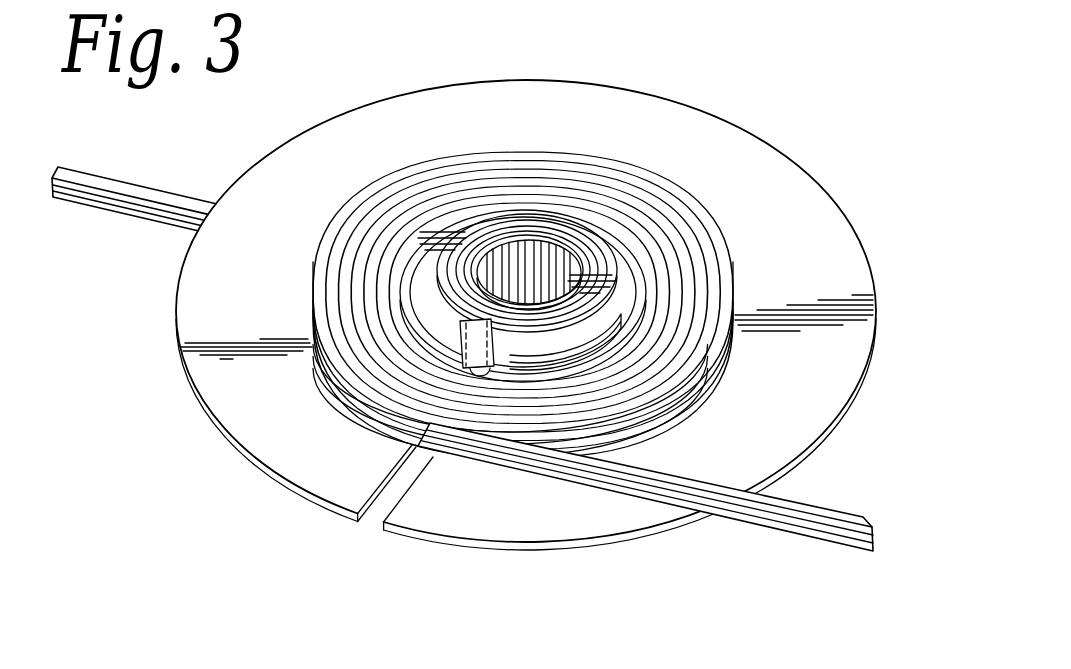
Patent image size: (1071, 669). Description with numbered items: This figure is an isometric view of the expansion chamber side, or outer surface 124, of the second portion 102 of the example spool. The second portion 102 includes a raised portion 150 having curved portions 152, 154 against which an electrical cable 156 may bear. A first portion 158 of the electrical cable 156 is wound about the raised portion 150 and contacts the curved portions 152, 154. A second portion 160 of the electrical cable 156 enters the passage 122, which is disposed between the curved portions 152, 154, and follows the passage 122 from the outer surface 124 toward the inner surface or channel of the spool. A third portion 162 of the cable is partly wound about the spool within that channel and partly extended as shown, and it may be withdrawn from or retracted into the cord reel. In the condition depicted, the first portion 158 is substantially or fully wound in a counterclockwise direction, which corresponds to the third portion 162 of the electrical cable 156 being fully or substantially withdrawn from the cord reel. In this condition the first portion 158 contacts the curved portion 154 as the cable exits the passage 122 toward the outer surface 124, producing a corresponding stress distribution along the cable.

The second portion 102 is at (739, 125).
The passage 122 is at (470, 370).
The outer surface 124 is at (492, 134).
The raised portion 150 is at (557, 205).
The curved portion 152 is at (410, 340).
The curved portion 154 is at (535, 368).
The electrical cable 156 is at (838, 507).
The first portion 158 is at (688, 276).
The second portion 160 is at (491, 373).
The third portion 162 is at (130, 188).